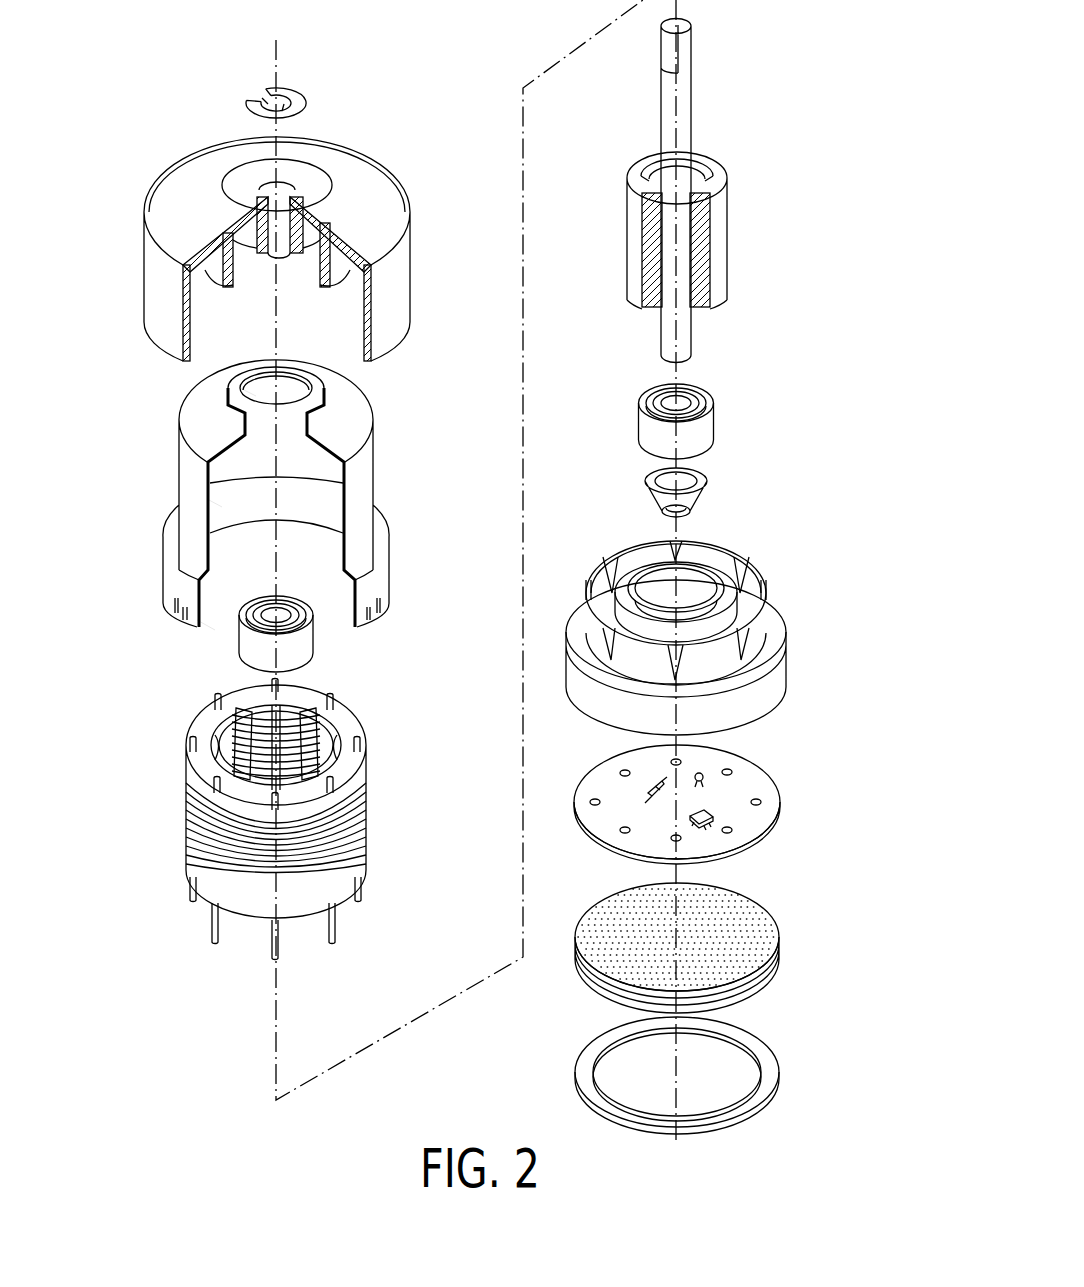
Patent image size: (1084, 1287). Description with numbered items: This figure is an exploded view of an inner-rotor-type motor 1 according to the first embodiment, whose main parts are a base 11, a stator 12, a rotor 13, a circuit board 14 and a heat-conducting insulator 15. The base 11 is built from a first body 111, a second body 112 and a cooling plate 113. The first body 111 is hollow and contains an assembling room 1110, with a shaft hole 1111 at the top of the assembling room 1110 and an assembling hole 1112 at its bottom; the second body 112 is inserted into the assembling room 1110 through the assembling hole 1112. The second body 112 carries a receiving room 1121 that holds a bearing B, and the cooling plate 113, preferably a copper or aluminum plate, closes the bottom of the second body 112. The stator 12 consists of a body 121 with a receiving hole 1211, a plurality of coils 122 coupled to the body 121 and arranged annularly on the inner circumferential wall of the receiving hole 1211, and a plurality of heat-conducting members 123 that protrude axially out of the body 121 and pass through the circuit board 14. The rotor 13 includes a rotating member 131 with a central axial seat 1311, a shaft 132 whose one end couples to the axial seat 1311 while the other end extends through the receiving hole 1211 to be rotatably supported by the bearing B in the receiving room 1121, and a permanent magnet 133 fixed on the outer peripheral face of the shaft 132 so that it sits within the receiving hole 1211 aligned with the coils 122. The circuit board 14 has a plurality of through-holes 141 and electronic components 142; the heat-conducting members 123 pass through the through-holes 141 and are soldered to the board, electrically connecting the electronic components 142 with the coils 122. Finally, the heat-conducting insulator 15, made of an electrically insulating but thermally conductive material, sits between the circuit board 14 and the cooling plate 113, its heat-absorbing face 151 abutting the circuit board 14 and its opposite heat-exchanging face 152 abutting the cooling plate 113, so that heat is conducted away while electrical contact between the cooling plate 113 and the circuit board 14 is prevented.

The inner-rotor-type motor 1 is at (772, 92).
The base 11 is at (496, 410).
The first body 111 is at (369, 482).
The assembling room 1110 is at (210, 511).
The shaft hole 1111 is at (252, 392).
The assembling hole 1112 is at (216, 630).
The second body 112 is at (643, 579).
The receiving room 1121 is at (695, 578).
The cooling plate 113 is at (578, 1068).
The stator 12 is at (260, 820).
The body 121 is at (190, 842).
The receiving hole 1211 is at (303, 748).
The coils 122 is at (208, 733).
The heat-conducting members 123 is at (213, 923).
The rotor 13 is at (471, 56).
The rotating member 131 is at (272, 228).
The axial seat 1311 is at (268, 195).
The shaft 132 is at (667, 120).
The permanent magnet 133 is at (628, 207).
The circuit board 14 is at (708, 795).
The through-holes 141 is at (732, 771).
The electronic components 142 is at (714, 817).
The heat-conducting insulator 15 is at (708, 948).
The heat-absorbing face 151 is at (758, 920).
The heat-exchanging face 152 is at (746, 995).
The bearing B is at (708, 427).